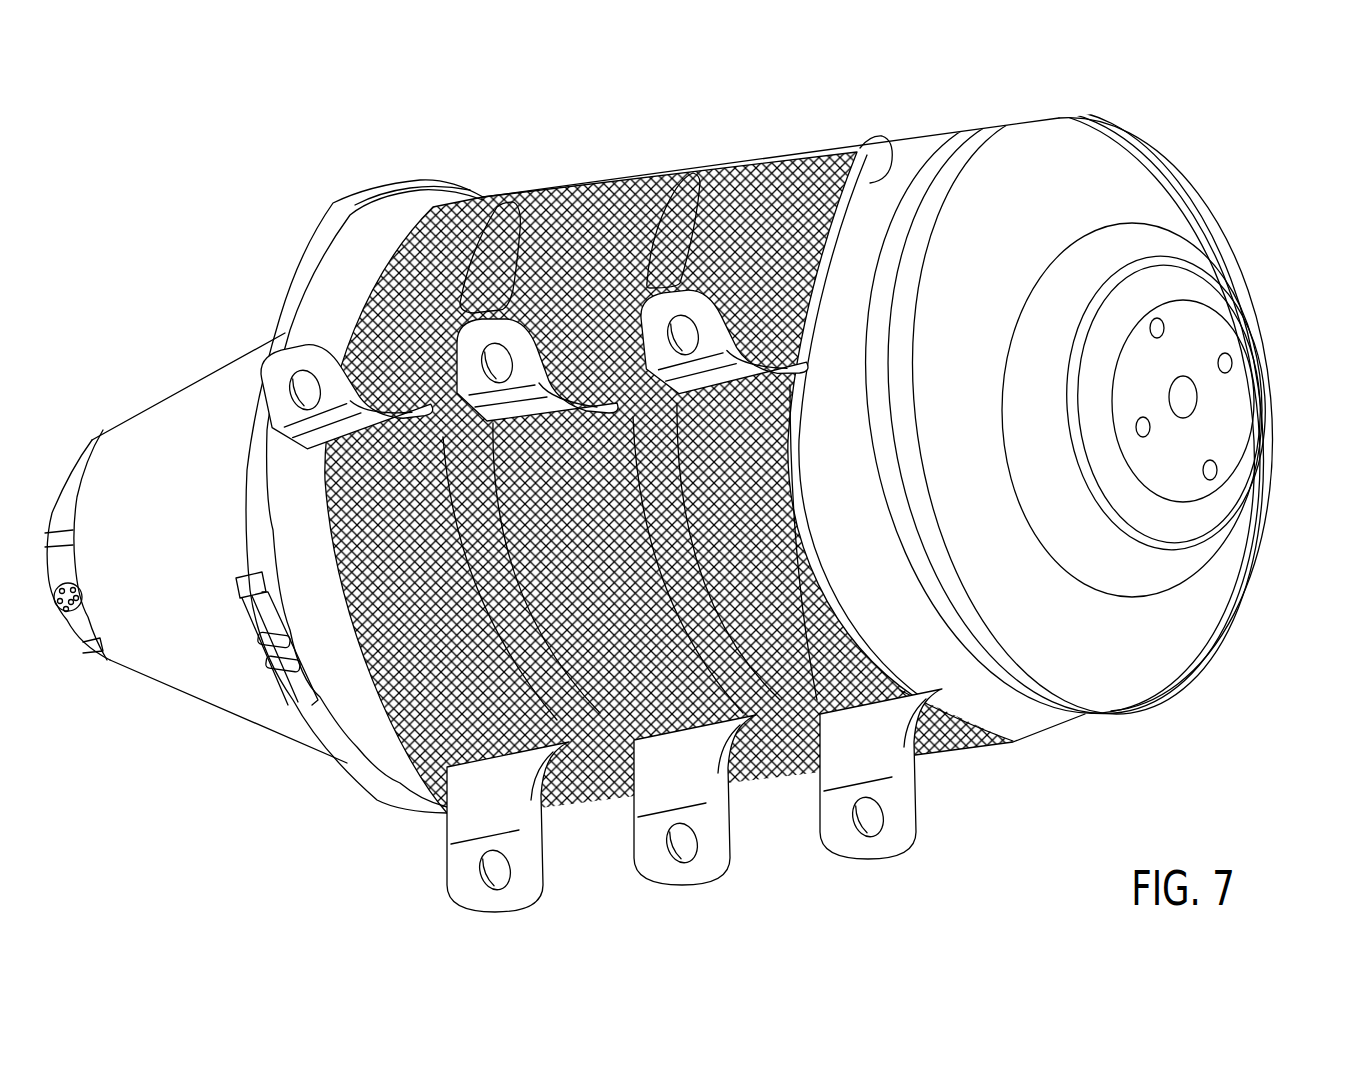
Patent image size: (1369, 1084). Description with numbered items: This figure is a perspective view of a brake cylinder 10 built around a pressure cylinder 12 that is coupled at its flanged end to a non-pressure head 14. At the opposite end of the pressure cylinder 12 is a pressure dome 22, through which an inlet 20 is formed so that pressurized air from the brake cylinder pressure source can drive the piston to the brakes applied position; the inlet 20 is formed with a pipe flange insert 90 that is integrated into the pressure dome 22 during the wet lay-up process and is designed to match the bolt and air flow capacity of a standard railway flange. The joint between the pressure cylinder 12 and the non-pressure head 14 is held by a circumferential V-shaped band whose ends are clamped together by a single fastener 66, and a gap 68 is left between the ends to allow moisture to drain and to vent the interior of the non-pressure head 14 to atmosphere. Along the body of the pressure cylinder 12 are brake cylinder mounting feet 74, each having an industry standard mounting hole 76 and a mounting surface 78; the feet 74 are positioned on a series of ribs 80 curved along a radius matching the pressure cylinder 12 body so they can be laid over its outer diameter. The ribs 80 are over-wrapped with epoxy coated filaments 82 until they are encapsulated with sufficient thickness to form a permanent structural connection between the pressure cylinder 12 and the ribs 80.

The brake cylinder 10 is at (699, 496).
The pressure cylinder 12 is at (1087, 412).
The non-pressure head 14 is at (157, 683).
The inlet 20 is at (1205, 402).
The pressure dome 22 is at (1173, 190).
The fastener 66 is at (253, 723).
The gap 68 is at (298, 648).
The brake cylinder mounting feet 74 is at (622, 588).
The mounting hole 76 is at (296, 368).
The mounting surface 78 is at (578, 588).
The rib 80 is at (883, 148).
The epoxy coated filaments 82 is at (733, 160).
The pipe flange insert 90 is at (1243, 460).